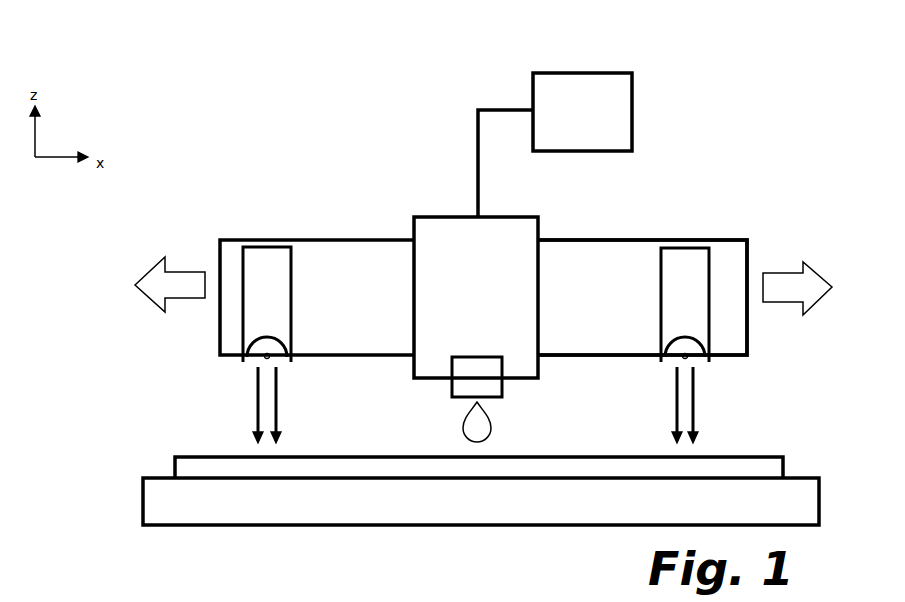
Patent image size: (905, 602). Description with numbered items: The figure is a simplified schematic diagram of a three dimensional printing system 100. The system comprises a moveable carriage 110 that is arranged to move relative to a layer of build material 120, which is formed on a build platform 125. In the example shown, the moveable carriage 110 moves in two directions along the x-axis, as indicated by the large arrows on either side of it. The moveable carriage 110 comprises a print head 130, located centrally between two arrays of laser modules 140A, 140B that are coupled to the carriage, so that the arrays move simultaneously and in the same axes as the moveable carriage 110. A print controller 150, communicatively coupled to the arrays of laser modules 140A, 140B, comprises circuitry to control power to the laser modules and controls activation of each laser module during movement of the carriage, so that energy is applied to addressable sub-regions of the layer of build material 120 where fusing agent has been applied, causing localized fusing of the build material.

The three dimensional printing system 100 is at (233, 214).
The moveable carriage 110 is at (695, 240).
The layer of build material 120 is at (770, 457).
The build platform 125 is at (143, 495).
The print head 130 is at (412, 215).
The array of laser modules 140A is at (334, 309).
The array of laser modules 140B is at (661, 307).
The print controller 150 is at (538, 73).